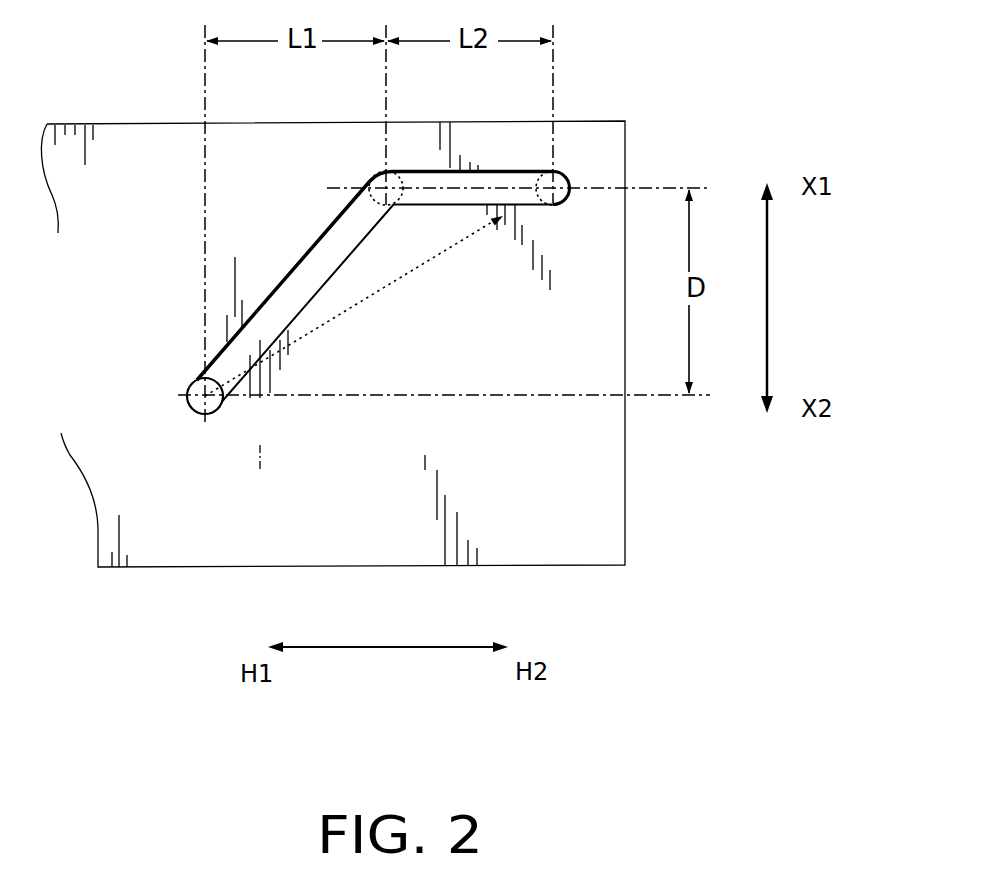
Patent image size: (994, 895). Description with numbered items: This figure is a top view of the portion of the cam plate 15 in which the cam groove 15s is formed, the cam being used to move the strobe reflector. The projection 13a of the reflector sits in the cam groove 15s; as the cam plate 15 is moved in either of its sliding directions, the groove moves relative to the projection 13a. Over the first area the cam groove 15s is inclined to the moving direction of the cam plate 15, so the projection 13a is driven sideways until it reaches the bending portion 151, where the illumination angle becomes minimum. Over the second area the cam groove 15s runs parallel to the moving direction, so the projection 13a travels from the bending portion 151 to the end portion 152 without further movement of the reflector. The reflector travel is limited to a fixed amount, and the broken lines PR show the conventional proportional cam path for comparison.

The cam plate 15 is at (600, 517).
The cam groove 15s is at (306, 294).
The bending portion 151 is at (383, 191).
The end portion 152 is at (560, 198).
The projection 13a is at (214, 409).
The broken lines PR is at (434, 262).